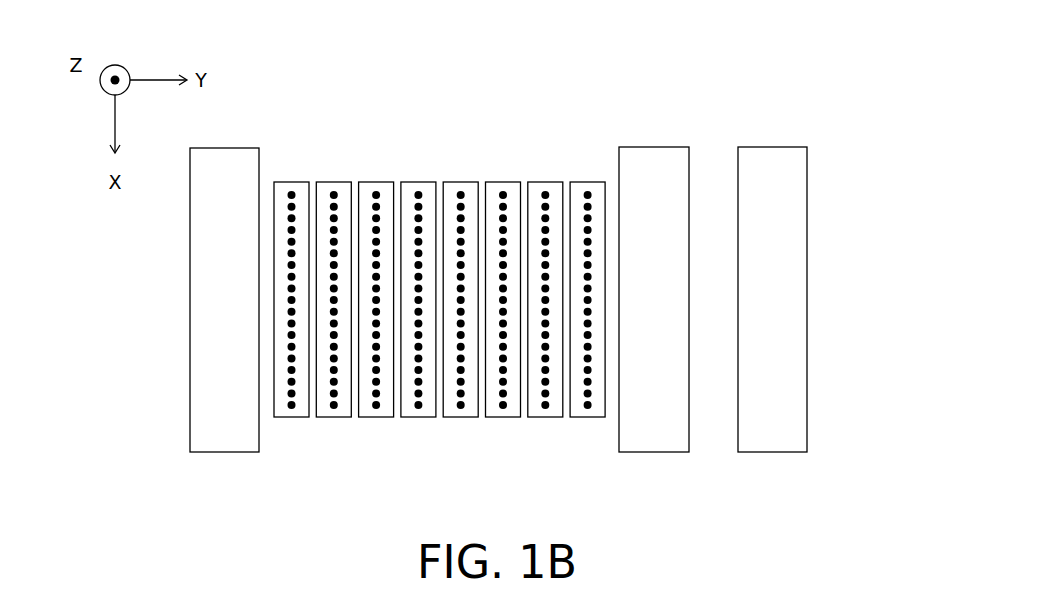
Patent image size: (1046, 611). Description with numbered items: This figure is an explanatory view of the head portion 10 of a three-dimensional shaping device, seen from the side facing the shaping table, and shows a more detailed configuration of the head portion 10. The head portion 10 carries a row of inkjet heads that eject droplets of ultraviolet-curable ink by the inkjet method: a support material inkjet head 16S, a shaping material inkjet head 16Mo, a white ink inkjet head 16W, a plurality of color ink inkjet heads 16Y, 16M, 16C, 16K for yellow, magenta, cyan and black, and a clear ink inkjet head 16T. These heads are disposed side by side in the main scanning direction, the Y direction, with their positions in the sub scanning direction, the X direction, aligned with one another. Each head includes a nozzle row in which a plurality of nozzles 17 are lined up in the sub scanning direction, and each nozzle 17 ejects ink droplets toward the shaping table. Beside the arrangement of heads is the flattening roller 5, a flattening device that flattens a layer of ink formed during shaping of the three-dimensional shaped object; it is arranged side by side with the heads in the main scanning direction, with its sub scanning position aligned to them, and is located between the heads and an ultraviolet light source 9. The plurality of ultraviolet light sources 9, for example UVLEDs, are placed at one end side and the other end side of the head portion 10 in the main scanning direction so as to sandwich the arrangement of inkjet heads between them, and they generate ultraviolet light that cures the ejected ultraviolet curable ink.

The flattening roller 5 is at (645, 312).
The ultraviolet light source 9 is at (216, 312).
The head portion 10 is at (589, 69).
The support material inkjet head 16S is at (292, 182).
The shaping material inkjet head 16Mo is at (334, 182).
The white ink inkjet head 16W is at (353, 289).
The color ink inkjet head (yellow) 16Y is at (418, 182).
The color ink inkjet head (magenta) 16M is at (461, 182).
The color ink inkjet head (cyan) 16C is at (503, 182).
The color ink inkjet head (black) 16K is at (545, 182).
The clear ink inkjet head 16T is at (588, 182).
The nozzle 17 is at (376, 410).